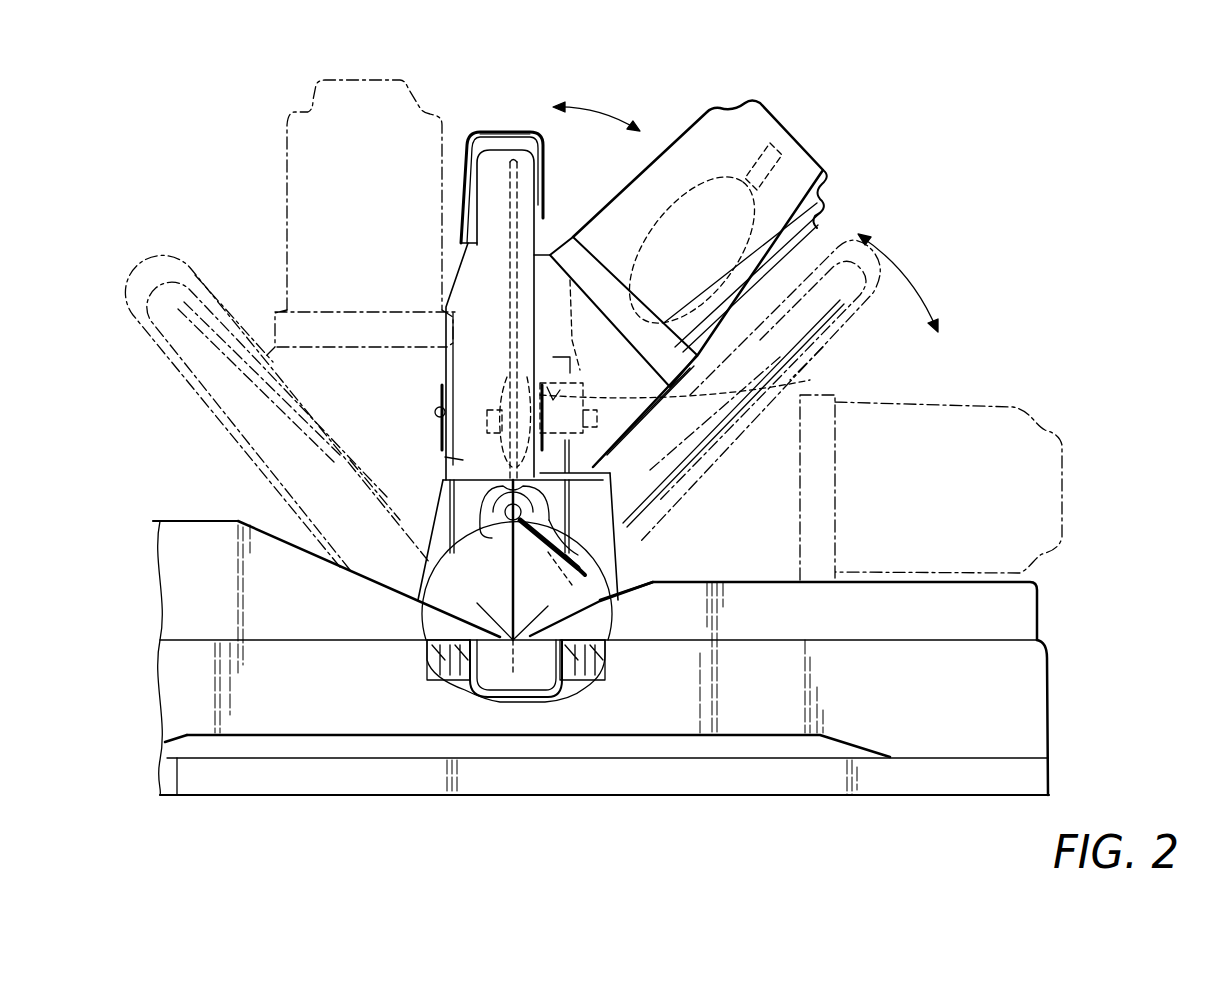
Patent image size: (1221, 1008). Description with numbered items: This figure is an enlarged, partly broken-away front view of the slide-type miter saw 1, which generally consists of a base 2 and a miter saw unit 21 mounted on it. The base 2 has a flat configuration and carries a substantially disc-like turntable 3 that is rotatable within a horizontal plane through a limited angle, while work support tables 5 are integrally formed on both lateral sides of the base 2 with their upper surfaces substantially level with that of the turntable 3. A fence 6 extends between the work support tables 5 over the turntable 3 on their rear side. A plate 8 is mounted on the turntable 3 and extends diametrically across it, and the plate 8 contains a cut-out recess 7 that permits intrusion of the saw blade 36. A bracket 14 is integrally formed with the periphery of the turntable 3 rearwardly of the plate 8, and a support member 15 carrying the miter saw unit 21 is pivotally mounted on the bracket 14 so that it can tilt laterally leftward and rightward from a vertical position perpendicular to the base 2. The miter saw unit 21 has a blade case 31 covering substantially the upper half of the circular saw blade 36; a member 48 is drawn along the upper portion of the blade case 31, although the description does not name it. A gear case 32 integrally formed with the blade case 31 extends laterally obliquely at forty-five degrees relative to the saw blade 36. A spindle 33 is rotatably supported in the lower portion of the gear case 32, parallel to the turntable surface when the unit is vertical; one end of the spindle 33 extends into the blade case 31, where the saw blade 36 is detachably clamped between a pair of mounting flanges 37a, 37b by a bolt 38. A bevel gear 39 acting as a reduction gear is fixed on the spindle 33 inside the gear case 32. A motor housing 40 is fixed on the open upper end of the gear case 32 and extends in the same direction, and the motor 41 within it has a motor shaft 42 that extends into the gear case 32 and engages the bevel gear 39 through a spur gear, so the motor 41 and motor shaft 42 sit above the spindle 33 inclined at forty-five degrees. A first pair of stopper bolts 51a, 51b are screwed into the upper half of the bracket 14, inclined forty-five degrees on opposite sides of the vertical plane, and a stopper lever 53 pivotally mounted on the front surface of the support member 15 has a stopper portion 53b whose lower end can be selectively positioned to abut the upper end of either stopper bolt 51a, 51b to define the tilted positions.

The slide-type miter saw 1 is at (1048, 622).
The base 2 is at (1035, 715).
The turntable 3 is at (785, 723).
The work support tables 5 is at (995, 633).
The fence 6 is at (1040, 583).
The cut-out recess 7 is at (512, 645).
The plate 8 is at (548, 657).
The bracket 14 is at (425, 610).
The support member 15 is at (445, 478).
The miter saw unit 21 is at (466, 126).
The blade case 31 is at (500, 162).
The gear case 32 is at (547, 278).
The spindle 33 is at (530, 355).
The circular saw blade 36 is at (440, 655).
The mounting flange 37a is at (447, 370).
The mounting flange 37b is at (527, 393).
The bolt 38 is at (437, 423).
The bevel gear 39 is at (813, 372).
The motor housing 40 is at (755, 103).
The motor 41 is at (700, 167).
The motor shaft 42 is at (602, 300).
The cover top 48 is at (498, 158).
The stopper bolt 51a is at (487, 633).
The stopper bolt 51b is at (614, 565).
The stopper lever 53 is at (647, 560).
The stopper portion 53b is at (617, 560).